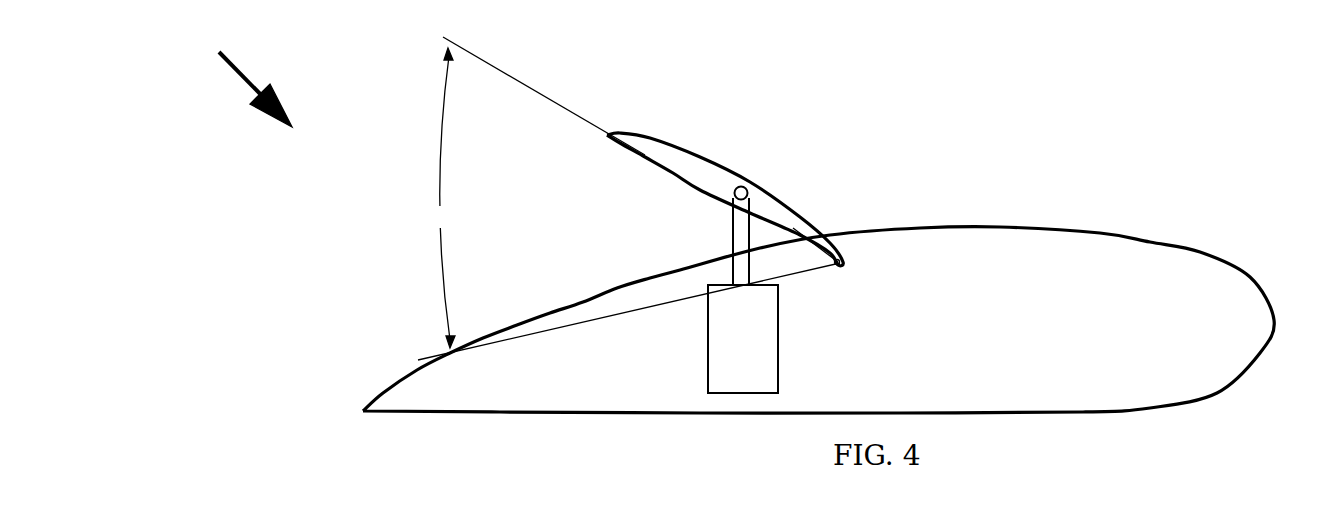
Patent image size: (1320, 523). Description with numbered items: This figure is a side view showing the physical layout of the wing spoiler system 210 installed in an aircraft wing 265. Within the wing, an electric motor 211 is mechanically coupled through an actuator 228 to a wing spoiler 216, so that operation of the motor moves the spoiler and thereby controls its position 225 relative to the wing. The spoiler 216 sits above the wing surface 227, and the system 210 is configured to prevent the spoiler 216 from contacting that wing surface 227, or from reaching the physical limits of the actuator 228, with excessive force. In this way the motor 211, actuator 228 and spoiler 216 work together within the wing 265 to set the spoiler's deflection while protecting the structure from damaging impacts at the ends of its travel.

The wing spoiler system 210 is at (237, 76).
The electric motor 211 is at (781, 353).
The wing spoiler 216 is at (725, 162).
The position 225 is at (630, 192).
The wing surface 227 is at (660, 274).
The actuator 228 is at (744, 237).
The aircraft wing 265 is at (1176, 315).